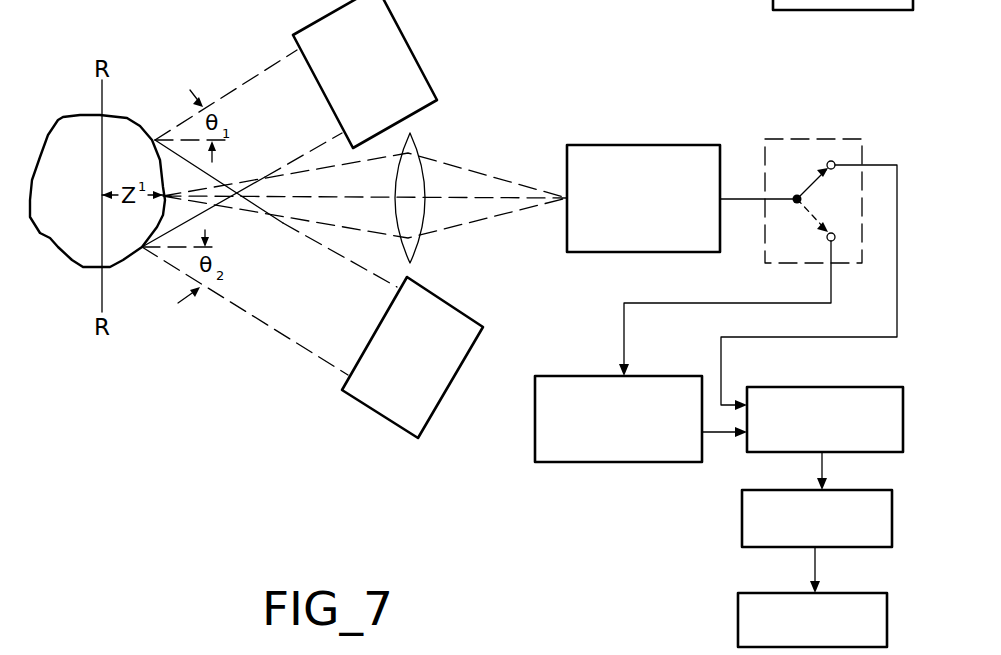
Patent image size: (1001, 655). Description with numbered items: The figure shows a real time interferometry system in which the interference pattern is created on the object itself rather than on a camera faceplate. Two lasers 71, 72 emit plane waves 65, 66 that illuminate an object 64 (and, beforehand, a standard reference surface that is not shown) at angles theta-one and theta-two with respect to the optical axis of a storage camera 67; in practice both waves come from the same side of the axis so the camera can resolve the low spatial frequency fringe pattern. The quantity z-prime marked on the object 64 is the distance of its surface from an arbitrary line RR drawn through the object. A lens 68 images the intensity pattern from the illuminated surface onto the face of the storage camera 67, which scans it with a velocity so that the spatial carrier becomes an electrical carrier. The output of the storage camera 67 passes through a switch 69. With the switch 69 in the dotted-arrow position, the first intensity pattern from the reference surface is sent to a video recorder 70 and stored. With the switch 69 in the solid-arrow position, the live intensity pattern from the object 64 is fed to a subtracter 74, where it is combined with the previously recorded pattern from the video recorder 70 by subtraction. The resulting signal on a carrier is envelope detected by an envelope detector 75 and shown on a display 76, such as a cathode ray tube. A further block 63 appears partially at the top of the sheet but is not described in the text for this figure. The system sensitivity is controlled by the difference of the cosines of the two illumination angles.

The processing unit 63 is at (823, 10).
The object 64 is at (58, 118).
The plane wave 65 is at (249, 73).
The plane wave 66 is at (289, 339).
The storage camera 67 is at (643, 145).
The lens 68 is at (412, 134).
The switch 69 is at (822, 139).
The video recorder 70 is at (603, 462).
The laser 71 is at (403, 35).
The laser 72 is at (390, 422).
The subtracter 74 is at (817, 387).
The envelope detector 75 is at (740, 523).
The display 76 is at (738, 614).